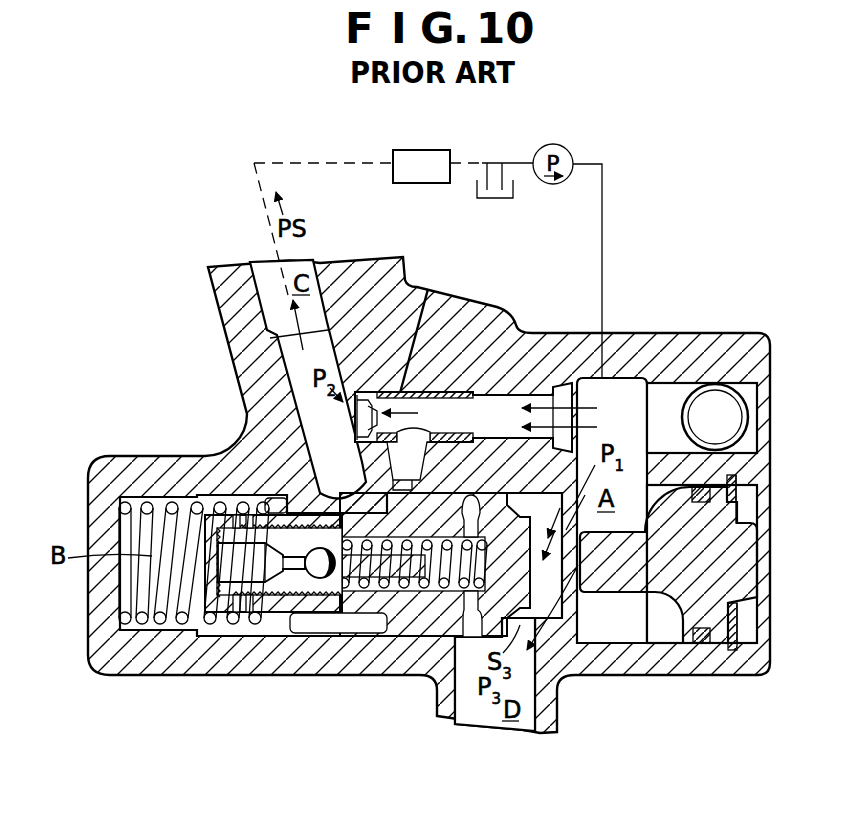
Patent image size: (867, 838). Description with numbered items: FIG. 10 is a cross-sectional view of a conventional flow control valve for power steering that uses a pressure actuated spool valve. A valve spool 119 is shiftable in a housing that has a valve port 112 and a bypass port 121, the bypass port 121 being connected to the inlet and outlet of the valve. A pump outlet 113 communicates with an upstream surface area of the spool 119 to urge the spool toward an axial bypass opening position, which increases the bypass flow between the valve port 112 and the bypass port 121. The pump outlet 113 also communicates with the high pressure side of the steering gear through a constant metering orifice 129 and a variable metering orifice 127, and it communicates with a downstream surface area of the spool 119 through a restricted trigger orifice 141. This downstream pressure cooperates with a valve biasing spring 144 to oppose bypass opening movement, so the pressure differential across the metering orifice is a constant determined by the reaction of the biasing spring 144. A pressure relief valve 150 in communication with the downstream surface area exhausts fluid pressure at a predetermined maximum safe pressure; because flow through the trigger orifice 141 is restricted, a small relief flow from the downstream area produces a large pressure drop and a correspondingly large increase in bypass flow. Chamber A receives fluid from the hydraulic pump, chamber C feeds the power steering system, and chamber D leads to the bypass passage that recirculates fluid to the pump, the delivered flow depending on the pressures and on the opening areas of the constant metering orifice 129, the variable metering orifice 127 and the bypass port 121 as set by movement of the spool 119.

The valve port 112 is at (600, 408).
The pump outlet 113 is at (603, 240).
The valve spool 119 is at (423, 623).
The bypass port 121 is at (538, 692).
The variable metering orifice 127 is at (417, 485).
The constant metering orifice 129 is at (368, 398).
The restricted trigger orifice 141 is at (282, 497).
The valve biasing spring 144 is at (173, 500).
The pressure relief valve 150 is at (300, 565).